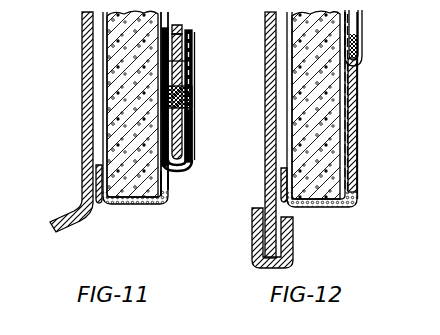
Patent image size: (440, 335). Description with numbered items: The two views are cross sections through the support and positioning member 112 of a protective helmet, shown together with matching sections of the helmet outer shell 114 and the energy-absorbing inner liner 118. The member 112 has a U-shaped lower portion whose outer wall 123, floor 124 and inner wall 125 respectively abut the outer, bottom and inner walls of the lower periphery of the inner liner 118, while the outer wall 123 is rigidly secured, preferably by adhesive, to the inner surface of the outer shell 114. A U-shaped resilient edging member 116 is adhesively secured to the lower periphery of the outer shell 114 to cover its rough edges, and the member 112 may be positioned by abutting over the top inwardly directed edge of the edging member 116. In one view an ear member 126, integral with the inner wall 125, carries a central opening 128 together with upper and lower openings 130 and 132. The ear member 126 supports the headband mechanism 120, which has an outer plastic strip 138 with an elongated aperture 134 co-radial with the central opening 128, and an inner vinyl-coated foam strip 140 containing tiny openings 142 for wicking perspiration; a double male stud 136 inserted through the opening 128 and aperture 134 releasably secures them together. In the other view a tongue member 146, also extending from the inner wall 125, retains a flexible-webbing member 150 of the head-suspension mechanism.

In FIG. 12, the support and positioning member 112 is at (358, 152).
In FIG. 11, the helmet outer shell 114 is at (67, 122).
In FIG. 12, the helmet outer shell 114 is at (254, 135).
In FIG. 12, the U-shaped edging member 116 is at (262, 238).
In FIG. 11, the energy-absorbing inner liner 118 is at (107, 102).
In FIG. 11, the headband mechanism 120 is at (203, 118).
In FIG. 11, the outer wall 123 is at (62, 184).
In FIG. 11, the floor 124 is at (146, 140).
In FIG. 12, the floor 124 is at (332, 145).
In FIG. 11, the inner wall 125 is at (184, 120).
In FIG. 12, the inner wall 125 is at (369, 120).
In FIG. 11, the ear member 126 is at (177, 83).
In FIG. 11, the central opening 128 is at (196, 74).
In FIG. 11, the upper opening 130 is at (209, 96).
In FIG. 11, the lower opening 132 is at (199, 176).
In FIG. 11, the elongated aperture 134 is at (209, 135).
In FIG. 11, the double male stud 136 is at (196, 99).
In FIG. 11, the outer plastic strip 138 is at (196, 20).
In FIG. 11, the inner vinyl-coated foam strip 140 is at (216, 95).
In FIG. 11, the tiny openings 142 is at (196, 151).
In FIG. 12, the tongue member 146 is at (374, 125).
In FIG. 12, the flexible-webbing member 150 is at (370, 38).